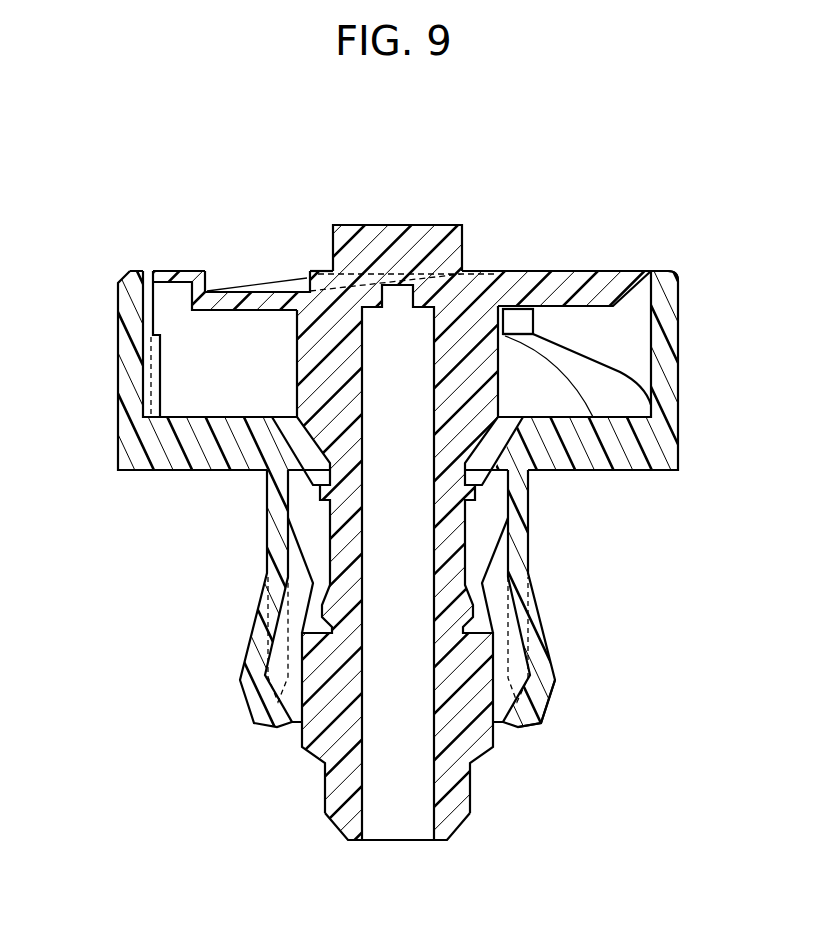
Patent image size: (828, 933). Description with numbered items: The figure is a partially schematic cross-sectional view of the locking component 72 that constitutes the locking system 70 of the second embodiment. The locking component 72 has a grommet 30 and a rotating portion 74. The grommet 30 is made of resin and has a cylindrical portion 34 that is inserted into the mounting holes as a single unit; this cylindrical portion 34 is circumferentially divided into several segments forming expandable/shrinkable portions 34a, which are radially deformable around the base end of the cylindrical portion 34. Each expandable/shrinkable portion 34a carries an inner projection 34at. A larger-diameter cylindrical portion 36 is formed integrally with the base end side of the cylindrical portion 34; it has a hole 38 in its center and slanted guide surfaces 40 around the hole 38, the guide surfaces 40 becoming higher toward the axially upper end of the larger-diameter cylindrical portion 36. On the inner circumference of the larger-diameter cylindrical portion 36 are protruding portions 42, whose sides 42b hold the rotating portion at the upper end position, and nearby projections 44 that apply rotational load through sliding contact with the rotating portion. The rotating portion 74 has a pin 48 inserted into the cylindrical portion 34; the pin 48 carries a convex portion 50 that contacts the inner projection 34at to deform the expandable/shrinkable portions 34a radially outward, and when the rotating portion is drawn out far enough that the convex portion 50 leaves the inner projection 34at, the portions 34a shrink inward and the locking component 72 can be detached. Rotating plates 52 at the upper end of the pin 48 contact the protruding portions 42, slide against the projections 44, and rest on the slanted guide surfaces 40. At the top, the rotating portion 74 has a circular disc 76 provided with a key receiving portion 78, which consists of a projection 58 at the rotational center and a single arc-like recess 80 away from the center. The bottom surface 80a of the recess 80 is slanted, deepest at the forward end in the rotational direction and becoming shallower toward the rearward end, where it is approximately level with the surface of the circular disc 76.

The locking component 72 is at (493, 102).
The locking system 70 is at (535, 102).
The grommet 30 is at (258, 548).
The cylindrical portion 34 is at (528, 613).
The expandable/shrinkable portions 34a is at (546, 680).
The inner projection 34at is at (297, 613).
The larger-diameter cylindrical portion 36 is at (670, 328).
The hole 38 is at (493, 443).
The slanted guide surfaces 40 is at (618, 390).
The protruding portions 42 is at (504, 309).
The sides 42b is at (527, 320).
The projections 44 is at (158, 377).
The pin 48 is at (342, 817).
The convex portion 50 is at (482, 748).
The rotating plates 52 is at (152, 320).
The projection 58 is at (400, 225).
The rotating portion 74 is at (572, 256).
The circular disc 76 is at (613, 271).
The key receiving portion 78 is at (309, 250).
The recess 80 is at (207, 278).
The bottom surface 80a is at (257, 292).